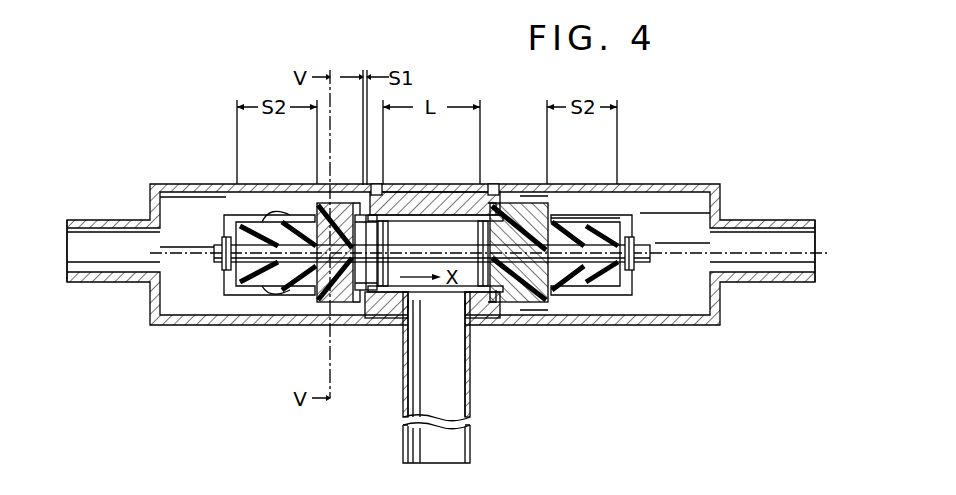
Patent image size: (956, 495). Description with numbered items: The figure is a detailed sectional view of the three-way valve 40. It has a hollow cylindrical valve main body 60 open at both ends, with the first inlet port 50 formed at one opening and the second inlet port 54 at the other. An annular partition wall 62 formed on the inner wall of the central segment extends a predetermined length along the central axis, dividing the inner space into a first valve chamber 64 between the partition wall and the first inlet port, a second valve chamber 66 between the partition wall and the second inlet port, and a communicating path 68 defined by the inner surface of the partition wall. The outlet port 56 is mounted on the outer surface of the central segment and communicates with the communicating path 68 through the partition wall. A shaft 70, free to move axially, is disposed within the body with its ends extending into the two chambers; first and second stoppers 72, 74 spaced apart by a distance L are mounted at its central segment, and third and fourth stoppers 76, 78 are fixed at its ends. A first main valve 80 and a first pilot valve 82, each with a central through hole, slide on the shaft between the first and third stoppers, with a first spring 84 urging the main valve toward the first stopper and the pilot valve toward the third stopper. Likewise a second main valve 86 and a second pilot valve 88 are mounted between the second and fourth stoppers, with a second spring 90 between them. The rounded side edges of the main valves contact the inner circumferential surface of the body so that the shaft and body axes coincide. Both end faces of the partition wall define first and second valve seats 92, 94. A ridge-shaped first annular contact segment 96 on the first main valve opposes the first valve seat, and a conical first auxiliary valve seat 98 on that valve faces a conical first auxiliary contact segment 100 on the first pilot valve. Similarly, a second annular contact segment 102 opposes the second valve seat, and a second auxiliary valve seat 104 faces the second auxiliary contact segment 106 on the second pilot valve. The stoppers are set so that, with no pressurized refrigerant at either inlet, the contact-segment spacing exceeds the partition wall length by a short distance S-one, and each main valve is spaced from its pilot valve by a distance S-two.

The three-way valve 40 is at (502, 102).
The first inlet port 50 is at (112, 220).
The second inlet port 54 is at (768, 220).
The outlet port 56 is at (470, 392).
The valve main body 60 is at (196, 184).
The partition wall 62 is at (445, 192).
The first valve chamber 64 is at (190, 300).
The second valve chamber 66 is at (683, 300).
The communicating path 68 is at (492, 190).
The shaft 70 is at (428, 192).
The first stopper 72 is at (389, 244).
The second stopper 74 is at (477, 244).
The third stopper 76 is at (221, 266).
The fourth stopper 78 is at (636, 248).
The first main valve 80 is at (340, 305).
The first pilot valve 82 is at (232, 296).
The first spring 84 is at (300, 302).
The second main valve 86 is at (512, 305).
The second pilot valve 88 is at (625, 300).
The second spring 90 is at (588, 300).
The first valve seat 92 is at (374, 190).
The second valve seat 94 is at (506, 203).
The first annular contact segment 96 is at (355, 205).
The first auxiliary valve seat 98 is at (292, 215).
The first auxiliary contact segment 100 is at (268, 292).
The second annular contact segment 102 is at (528, 203).
The second auxiliary valve seat 104 is at (558, 300).
The second auxiliary contact segment 106 is at (572, 224).